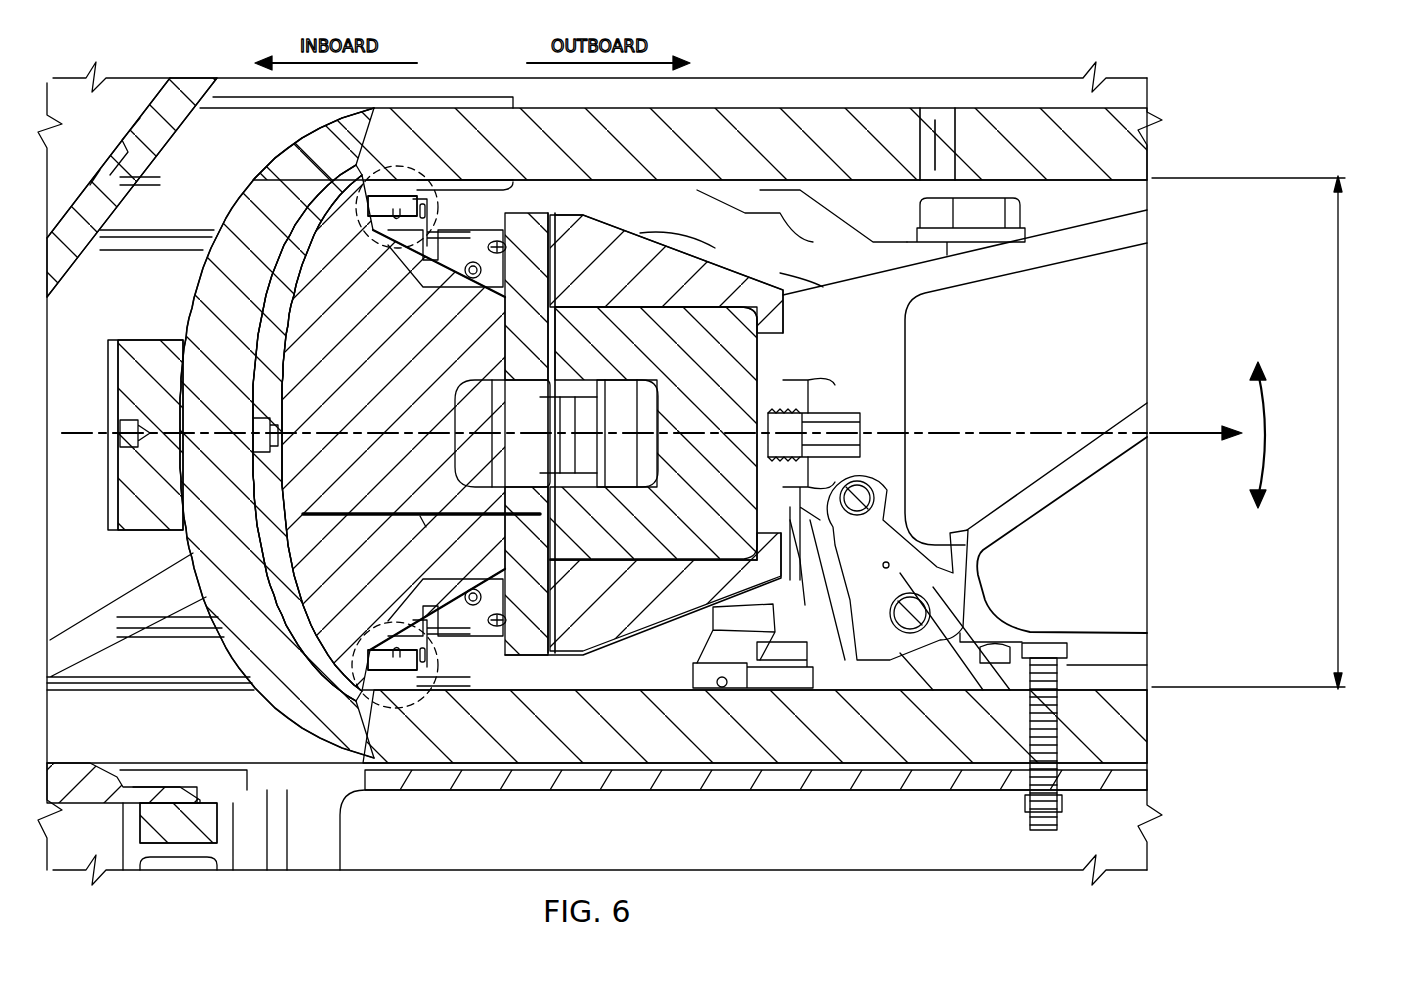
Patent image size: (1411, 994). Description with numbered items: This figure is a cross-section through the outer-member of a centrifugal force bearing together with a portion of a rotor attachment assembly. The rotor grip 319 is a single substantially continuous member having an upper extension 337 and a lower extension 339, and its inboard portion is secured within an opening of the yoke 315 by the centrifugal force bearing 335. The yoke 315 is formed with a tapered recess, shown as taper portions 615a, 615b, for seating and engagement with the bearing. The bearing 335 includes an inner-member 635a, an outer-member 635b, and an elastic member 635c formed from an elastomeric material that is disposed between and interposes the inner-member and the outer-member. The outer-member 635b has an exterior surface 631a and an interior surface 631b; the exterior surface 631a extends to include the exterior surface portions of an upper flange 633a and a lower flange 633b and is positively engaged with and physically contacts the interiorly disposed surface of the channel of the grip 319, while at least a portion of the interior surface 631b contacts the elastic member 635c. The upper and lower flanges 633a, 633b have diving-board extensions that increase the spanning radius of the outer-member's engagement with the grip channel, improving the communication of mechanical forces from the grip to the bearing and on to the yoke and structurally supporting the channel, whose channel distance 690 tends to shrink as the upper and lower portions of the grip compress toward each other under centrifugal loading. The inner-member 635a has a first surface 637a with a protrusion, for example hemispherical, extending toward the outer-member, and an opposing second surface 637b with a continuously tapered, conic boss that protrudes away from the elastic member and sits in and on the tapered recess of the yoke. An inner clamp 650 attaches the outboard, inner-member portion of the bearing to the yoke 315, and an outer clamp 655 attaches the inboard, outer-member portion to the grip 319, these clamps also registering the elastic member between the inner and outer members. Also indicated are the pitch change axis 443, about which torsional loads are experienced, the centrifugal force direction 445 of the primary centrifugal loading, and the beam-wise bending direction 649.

The yoke 315 is at (745, 352).
The rotor grip 319 is at (755, 125).
The centrifugal force (CF) bearing 335 is at (421, 534).
The upper extension 337 is at (1080, 160).
The lower extension 339 is at (1110, 740).
The pitch change axis 443 is at (85, 432).
The centrifugal force direction 445 is at (1185, 432).
The taper portion 615a is at (575, 330).
The taper portion 615b is at (590, 535).
The exterior surface 631a is at (280, 340).
The interior surface 631b is at (240, 640).
The upper flange 633a is at (400, 172).
The lower flange 633b is at (355, 690).
The inner-member 635a is at (445, 415).
The outer-member 635b is at (240, 340).
The elastic member 635c is at (320, 300).
The first surface 637a is at (440, 462).
The second surface 637b is at (475, 370).
The bending direction 649 is at (1262, 405).
The inner clamp 650 is at (612, 622).
The outer clamp 655 is at (125, 532).
The channel distance 690 is at (1342, 348).